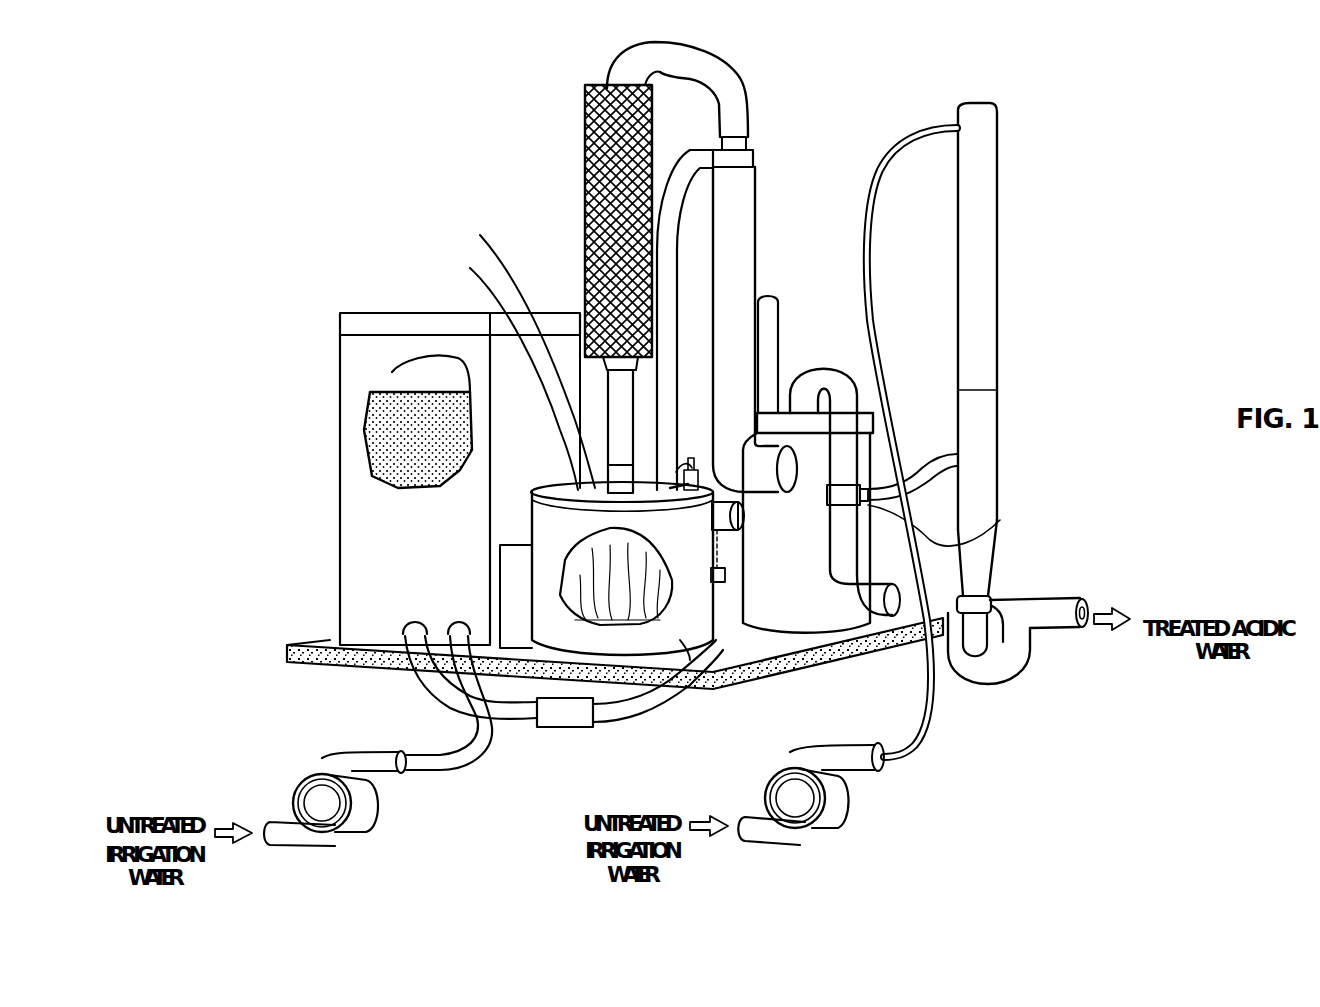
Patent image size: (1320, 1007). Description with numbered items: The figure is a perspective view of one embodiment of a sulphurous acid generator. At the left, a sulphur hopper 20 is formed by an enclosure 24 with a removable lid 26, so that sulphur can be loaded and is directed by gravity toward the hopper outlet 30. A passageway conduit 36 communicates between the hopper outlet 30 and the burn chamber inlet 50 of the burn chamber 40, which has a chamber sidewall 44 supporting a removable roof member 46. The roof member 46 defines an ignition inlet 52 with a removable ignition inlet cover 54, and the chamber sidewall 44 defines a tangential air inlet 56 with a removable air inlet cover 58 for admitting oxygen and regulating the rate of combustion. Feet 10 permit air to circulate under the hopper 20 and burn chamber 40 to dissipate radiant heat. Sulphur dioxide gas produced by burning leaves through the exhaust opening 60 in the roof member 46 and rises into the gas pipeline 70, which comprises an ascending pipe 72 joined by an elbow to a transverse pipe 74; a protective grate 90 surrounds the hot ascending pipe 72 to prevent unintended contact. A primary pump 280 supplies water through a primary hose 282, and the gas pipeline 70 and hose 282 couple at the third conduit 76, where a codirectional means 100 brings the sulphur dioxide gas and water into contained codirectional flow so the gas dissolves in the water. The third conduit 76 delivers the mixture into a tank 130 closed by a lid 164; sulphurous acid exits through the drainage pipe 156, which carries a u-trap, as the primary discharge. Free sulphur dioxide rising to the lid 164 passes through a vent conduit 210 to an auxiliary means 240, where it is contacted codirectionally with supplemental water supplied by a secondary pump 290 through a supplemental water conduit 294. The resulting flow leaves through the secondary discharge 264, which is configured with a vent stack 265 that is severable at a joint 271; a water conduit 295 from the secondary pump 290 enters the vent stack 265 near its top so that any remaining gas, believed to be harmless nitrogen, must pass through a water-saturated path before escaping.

The feet 10 is at (326, 640).
The sulphur hopper 20 is at (338, 444).
The enclosure 24 is at (376, 526).
The lid 26 is at (374, 312).
The hopper outlet 30 is at (485, 598).
The passageway conduit 36 is at (462, 690).
The burn chamber 40 is at (580, 538).
The chamber sidewall 44 is at (690, 625).
The roof member 46 is at (506, 371).
The burn chamber inlet 50 is at (562, 584).
The ignition inlet 52 is at (690, 468).
The ignition inlet cover 54 is at (686, 457).
The air inlet 56 is at (742, 530).
The air inlet cover 58 is at (720, 582).
The exhaust opening 60 is at (581, 320).
The gas pipeline 70 is at (604, 84).
The ascending pipe 72 is at (608, 383).
The transverse pipe 74 is at (672, 48).
The third conduit 76 is at (746, 308).
The protective grate 90 is at (586, 140).
The codirectional means 100 is at (762, 151).
The tank 130 is at (818, 541).
The drainage pipe 156 is at (975, 598).
The lid 164 is at (779, 385).
The vent conduit 210 is at (824, 380).
The auxiliary means 240 is at (925, 470).
The secondary discharge 264 is at (1002, 600).
The vent stack 265 is at (985, 344).
The joint 271 is at (985, 388).
The primary pump 280 is at (366, 806).
The primary hose 282 is at (503, 748).
The secondary pump 290 is at (842, 795).
The supplemental water conduit 294 is at (915, 515).
The water conduit 295 is at (908, 138).